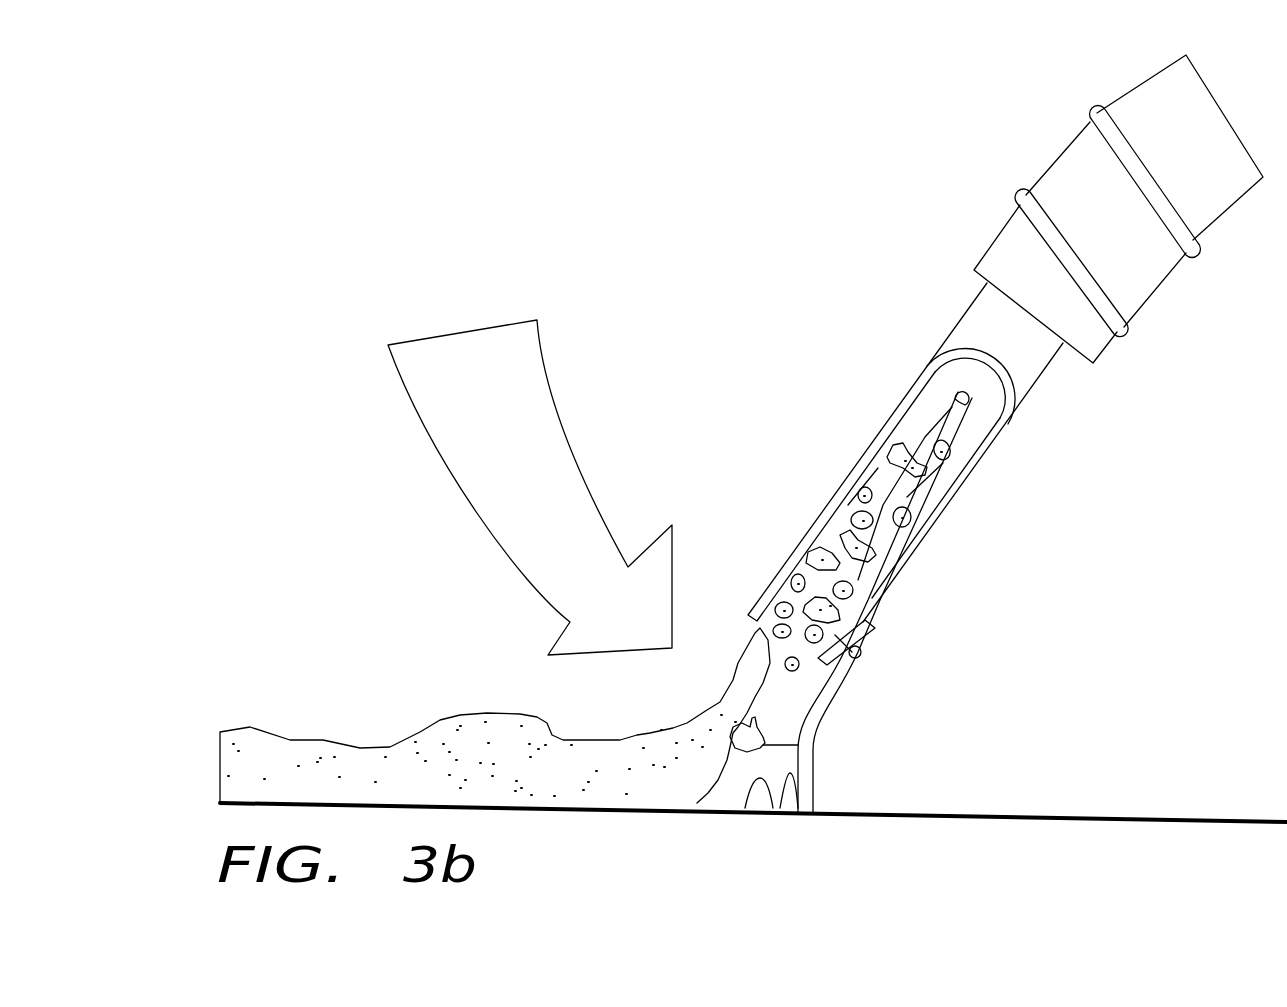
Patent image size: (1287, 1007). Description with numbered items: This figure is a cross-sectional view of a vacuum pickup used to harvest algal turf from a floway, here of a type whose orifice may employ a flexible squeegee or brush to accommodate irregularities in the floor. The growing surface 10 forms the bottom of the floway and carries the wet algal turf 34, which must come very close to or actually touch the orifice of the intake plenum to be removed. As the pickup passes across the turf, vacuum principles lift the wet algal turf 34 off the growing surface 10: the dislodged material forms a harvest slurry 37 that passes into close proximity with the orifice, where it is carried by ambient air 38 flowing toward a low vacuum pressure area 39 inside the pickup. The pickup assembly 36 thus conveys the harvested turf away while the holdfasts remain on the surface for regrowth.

The growing surface 10 is at (1120, 813).
The wet algal turf 34 is at (422, 778).
The upper pipe with collars 36 is at (1095, 213).
The harvest slurry 37 is at (857, 550).
The ambient air 38 is at (530, 487).
The low vacuum pressure area 39 is at (800, 755).